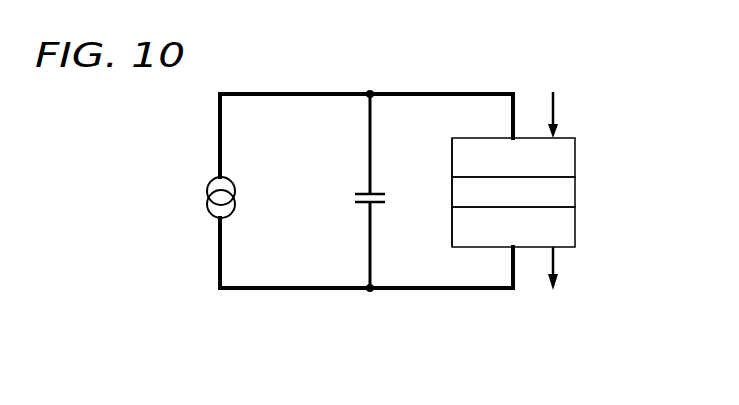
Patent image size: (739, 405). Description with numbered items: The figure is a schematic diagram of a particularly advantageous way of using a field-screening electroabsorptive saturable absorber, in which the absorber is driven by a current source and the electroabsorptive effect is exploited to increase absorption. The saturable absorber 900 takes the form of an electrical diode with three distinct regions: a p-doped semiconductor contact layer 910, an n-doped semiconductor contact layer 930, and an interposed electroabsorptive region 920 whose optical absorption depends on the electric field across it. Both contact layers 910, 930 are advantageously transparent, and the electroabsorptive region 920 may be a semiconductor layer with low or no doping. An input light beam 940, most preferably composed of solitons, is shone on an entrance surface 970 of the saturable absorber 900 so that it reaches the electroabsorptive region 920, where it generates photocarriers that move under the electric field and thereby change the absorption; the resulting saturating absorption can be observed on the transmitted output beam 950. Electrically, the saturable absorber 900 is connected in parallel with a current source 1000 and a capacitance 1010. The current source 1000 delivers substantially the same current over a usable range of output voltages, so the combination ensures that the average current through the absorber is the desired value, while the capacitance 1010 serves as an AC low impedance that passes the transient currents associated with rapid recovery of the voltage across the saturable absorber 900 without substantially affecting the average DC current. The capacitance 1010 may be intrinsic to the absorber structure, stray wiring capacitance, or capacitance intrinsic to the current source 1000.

The saturable absorber 900 is at (546, 182).
The p-doped semiconductor contact layer 910 is at (530, 169).
The electroabsorptive region 920 is at (530, 202).
The n-doped semiconductor contact layer 930 is at (530, 238).
The input light beam 940 is at (555, 113).
The transmitted output beam 950 is at (555, 272).
The entrance surface 970 is at (452, 149).
The current source 1000 is at (235, 185).
The capacitance 1010 is at (362, 203).